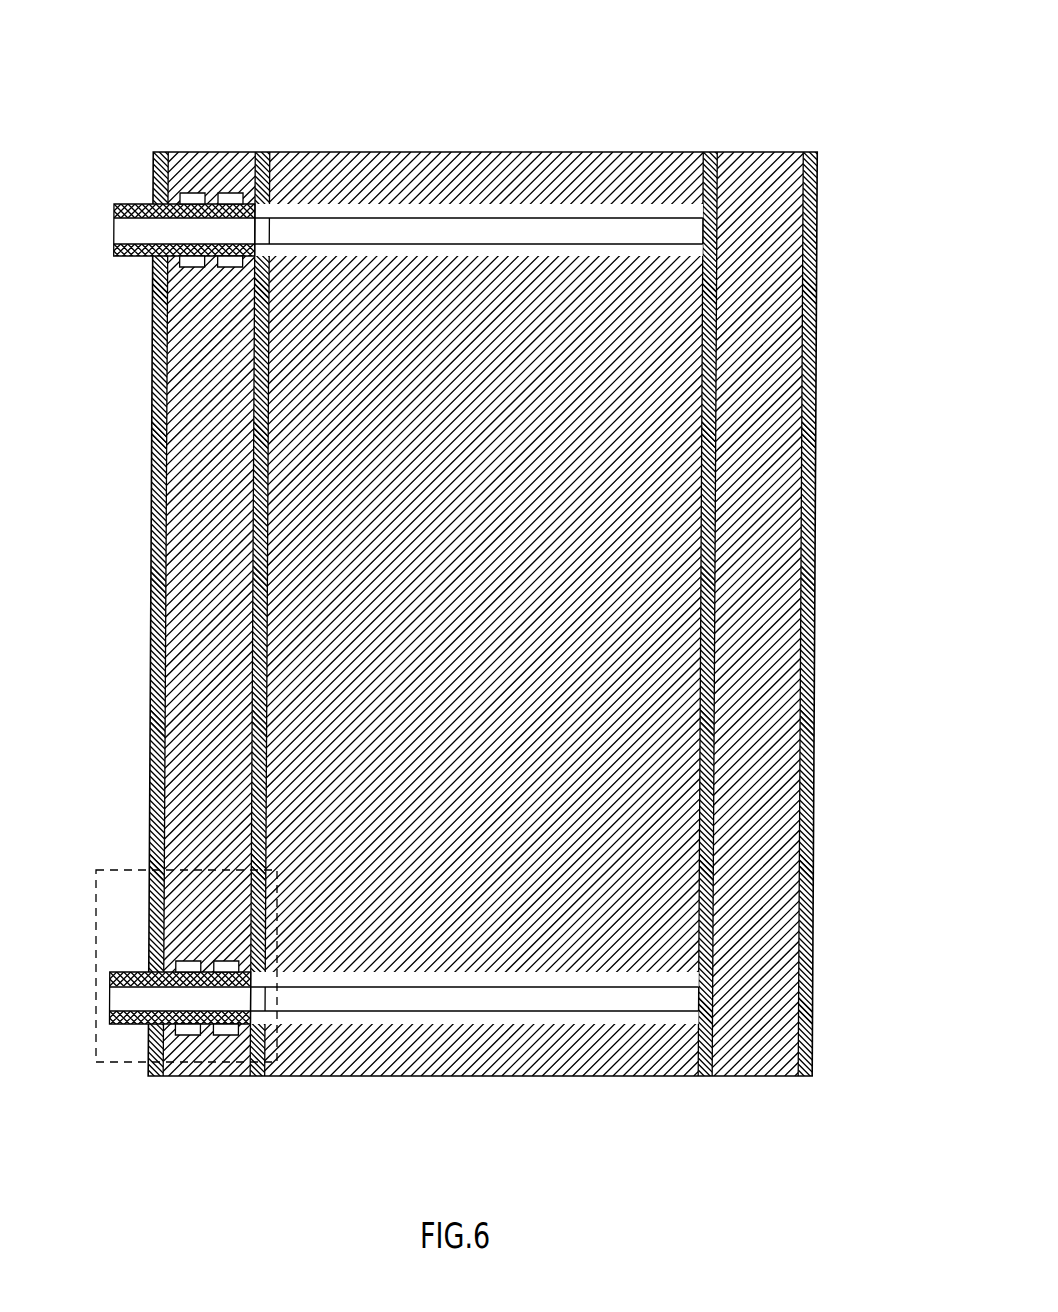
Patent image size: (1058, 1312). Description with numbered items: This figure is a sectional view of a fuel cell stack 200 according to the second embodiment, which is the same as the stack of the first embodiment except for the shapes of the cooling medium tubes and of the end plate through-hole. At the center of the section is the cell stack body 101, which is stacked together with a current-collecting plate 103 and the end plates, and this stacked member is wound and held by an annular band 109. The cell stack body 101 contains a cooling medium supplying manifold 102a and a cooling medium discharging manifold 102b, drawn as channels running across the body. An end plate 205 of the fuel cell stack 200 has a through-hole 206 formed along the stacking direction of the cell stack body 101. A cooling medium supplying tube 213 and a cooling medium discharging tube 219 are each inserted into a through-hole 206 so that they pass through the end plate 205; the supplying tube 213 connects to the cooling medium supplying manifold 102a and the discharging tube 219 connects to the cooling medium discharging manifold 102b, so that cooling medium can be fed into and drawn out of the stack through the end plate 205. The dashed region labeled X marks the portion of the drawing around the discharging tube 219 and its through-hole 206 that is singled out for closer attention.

The fuel cell stack 200 is at (529, 597).
The cell stack body 101 is at (695, 136).
The cooling medium supplying manifold 102a is at (868, 237).
The cooling medium discharging manifold 102b is at (481, 1004).
The current-collecting plate 103 is at (255, 1076).
The annular band 109 is at (148, 778).
The end plate 205 is at (202, 591).
The through-hole 206 is at (248, 193).
The cooling medium supplying tube 213 is at (207, 193).
The cooling medium discharging tube 219 is at (207, 1036).
The detail region X is at (95, 1062).